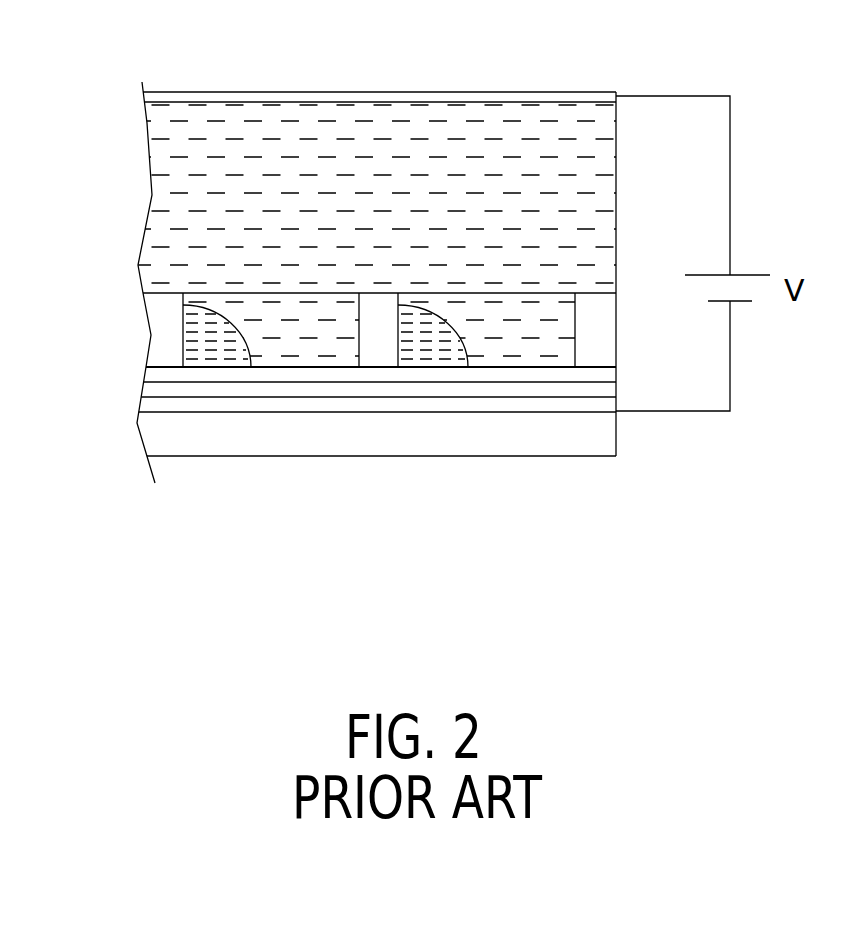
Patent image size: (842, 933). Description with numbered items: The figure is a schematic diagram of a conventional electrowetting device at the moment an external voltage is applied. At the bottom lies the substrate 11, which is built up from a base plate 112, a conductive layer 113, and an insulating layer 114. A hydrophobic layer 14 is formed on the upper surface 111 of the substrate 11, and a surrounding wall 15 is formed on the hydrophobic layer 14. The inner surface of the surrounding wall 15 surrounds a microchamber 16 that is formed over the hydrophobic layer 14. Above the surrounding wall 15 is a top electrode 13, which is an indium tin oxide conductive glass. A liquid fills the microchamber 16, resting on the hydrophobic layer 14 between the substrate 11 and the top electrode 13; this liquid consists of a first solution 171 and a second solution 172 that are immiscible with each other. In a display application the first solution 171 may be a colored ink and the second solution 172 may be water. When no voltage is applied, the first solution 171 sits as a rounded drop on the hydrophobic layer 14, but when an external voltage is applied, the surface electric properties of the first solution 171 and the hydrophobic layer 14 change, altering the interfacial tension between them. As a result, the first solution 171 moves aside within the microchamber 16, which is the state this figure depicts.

The substrate 11 is at (438, 466).
The upper surface 111 is at (583, 382).
The base plate 112 is at (594, 447).
The conductive layer 113 is at (617, 411).
The insulating layer 114 is at (607, 390).
The top electrode 13 is at (544, 95).
The hydrophobic layer 14 is at (154, 373).
The surrounding wall 15 is at (362, 312).
The microchamber 16 is at (305, 307).
The first solution 171 is at (210, 342).
The second solution 172 is at (248, 157).